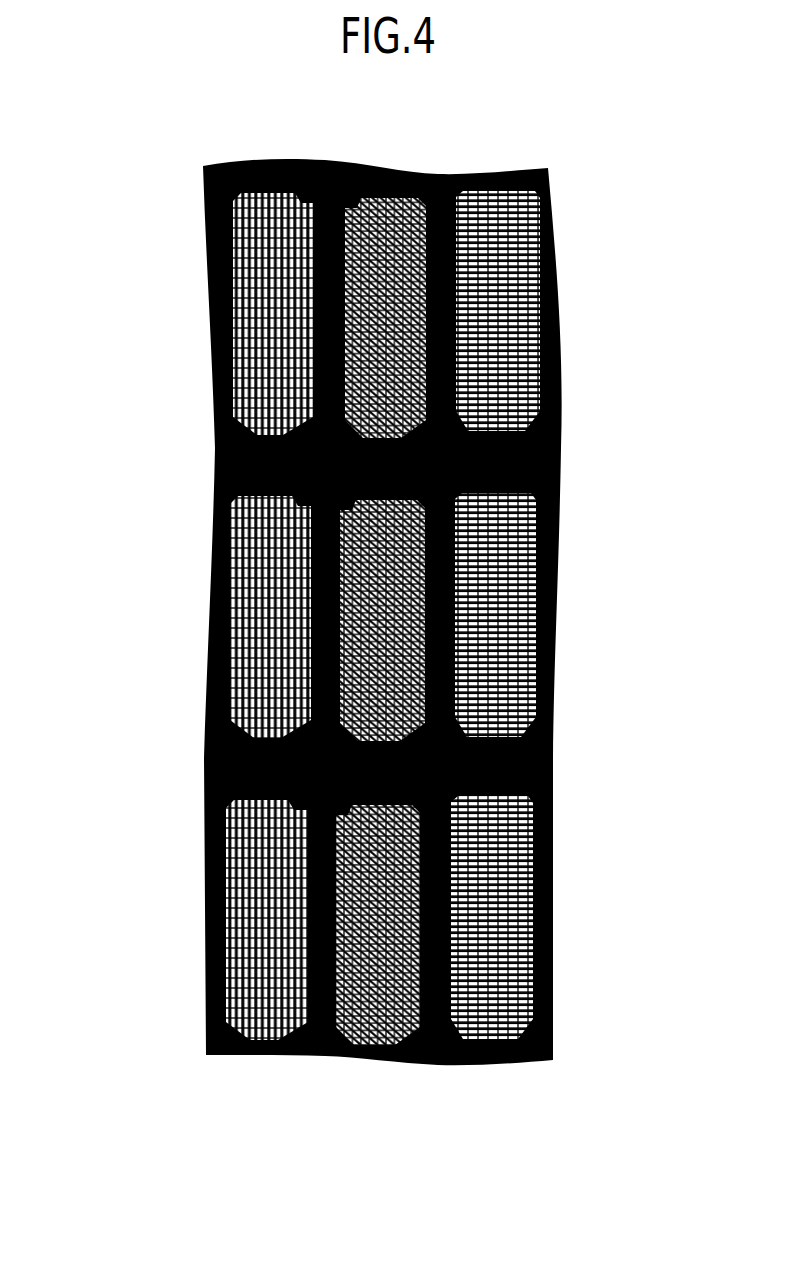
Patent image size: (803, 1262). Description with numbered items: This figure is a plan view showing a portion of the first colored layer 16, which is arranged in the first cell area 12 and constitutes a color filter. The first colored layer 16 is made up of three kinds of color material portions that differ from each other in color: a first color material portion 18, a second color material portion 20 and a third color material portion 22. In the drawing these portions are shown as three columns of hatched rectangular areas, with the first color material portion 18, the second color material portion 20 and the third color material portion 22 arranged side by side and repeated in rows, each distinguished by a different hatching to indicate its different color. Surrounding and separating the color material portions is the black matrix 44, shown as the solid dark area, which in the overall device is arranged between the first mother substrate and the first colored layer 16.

The first cell area 12 is at (324, 641).
The first colored layer 16 is at (383, 681).
The first color material portion 18 is at (250, 1036).
The second color material portion 20 is at (368, 1038).
The third color material portion 22 is at (495, 660).
The black matrix 44 is at (437, 166).